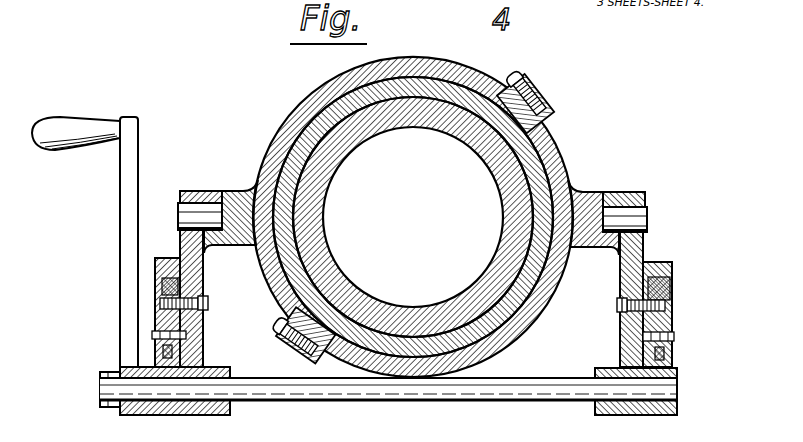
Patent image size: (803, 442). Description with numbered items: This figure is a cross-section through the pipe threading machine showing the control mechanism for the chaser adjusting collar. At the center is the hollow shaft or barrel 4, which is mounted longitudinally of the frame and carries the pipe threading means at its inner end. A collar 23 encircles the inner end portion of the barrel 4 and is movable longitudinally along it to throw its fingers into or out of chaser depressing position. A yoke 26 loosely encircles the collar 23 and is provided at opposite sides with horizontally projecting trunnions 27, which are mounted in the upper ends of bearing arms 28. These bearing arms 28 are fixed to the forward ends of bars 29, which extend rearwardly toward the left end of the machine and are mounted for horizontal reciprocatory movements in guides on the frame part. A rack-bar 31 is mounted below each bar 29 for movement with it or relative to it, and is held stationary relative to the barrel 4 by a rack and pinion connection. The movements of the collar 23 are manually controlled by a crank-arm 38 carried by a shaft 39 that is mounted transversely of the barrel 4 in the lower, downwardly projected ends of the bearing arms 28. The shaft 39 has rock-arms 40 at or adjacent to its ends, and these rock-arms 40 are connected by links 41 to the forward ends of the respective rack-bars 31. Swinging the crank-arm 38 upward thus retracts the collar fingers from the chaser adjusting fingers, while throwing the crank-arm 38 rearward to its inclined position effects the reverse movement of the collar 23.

The hollow shaft or barrel 4 is at (312, 218).
The collar 23 is at (291, 169).
The yoke 26 is at (296, 121).
The trunnions 27 is at (192, 216).
The bearing arms 28 is at (199, 278).
The bars 29 is at (203, 318).
The rack-bar 31 is at (158, 336).
The crank-arm or lever 38 is at (130, 228).
The shaft 39 is at (364, 382).
The rock-arms 40 is at (170, 368).
The links 41 is at (198, 340).